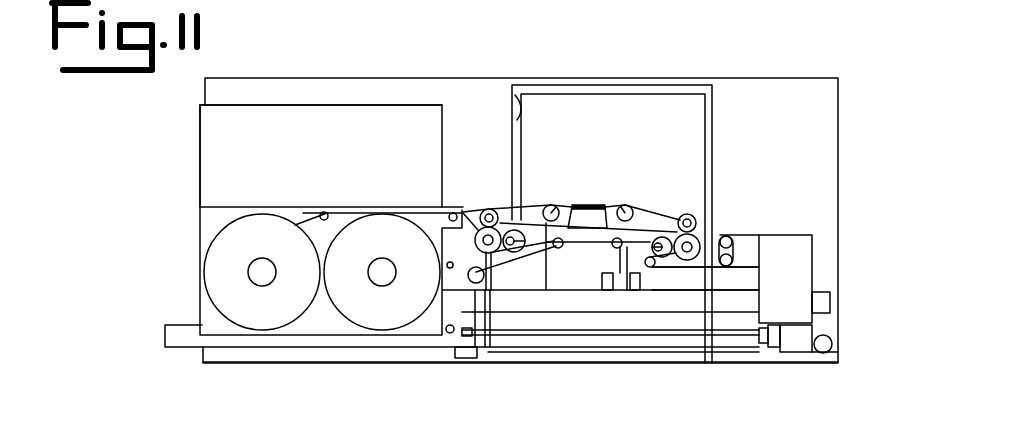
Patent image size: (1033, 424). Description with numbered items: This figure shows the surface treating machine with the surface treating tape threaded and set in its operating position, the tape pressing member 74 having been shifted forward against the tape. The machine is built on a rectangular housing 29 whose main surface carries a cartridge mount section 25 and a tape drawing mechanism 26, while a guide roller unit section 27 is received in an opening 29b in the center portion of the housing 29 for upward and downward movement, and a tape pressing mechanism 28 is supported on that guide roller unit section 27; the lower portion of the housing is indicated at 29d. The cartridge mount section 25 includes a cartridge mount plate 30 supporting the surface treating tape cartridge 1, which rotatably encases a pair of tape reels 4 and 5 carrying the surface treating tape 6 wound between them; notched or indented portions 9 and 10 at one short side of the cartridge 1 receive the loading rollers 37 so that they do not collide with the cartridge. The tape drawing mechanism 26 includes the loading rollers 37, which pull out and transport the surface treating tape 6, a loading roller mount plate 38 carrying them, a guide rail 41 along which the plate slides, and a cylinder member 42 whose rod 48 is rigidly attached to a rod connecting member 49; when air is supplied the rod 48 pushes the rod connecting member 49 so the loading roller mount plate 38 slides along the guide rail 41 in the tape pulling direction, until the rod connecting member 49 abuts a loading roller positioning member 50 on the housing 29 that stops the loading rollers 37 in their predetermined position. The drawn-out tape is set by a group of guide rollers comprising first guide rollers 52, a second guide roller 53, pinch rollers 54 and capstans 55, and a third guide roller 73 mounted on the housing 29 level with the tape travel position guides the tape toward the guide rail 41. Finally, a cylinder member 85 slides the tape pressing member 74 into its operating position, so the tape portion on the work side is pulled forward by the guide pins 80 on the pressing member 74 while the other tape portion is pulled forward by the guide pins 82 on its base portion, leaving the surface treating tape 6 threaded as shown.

The surface treating tape cartridge 1 is at (205, 218).
The tape reel 4 is at (256, 320).
The tape reel 5 is at (372, 320).
The surface treating tape 6 is at (450, 268).
The notched portion 9 is at (455, 352).
The indented portion 10 is at (459, 330).
The cartridge mount section 25 is at (203, 160).
The tape drawing mechanism 26 is at (797, 272).
The guide roller unit section 27 is at (660, 110).
The tape pressing mechanism 28 is at (582, 323).
The housing 29 is at (232, 88).
The opening 29b is at (516, 100).
The housing bottom portion 29d is at (812, 363).
The cartridge mount plate 30 is at (203, 124).
The loading rollers 37 is at (731, 257).
The loading roller mount plate 38 is at (800, 250).
The guide rail 41 is at (728, 305).
The cylinder member 42 is at (175, 335).
The rod 48 is at (745, 343).
The rod connecting member 49 is at (793, 345).
The loading roller positioning member 50 is at (833, 344).
The first guide rollers 52 is at (551, 205).
The second guide roller 53 is at (652, 268).
The pinch rollers 54 is at (485, 210).
The capstans 55 is at (488, 228).
The third guide roller 73 is at (498, 300).
The tape pressing member 74 is at (588, 212).
The guide pins 80 is at (556, 208).
The guide pins 82 is at (558, 250).
The cylinder member 85 is at (627, 325).